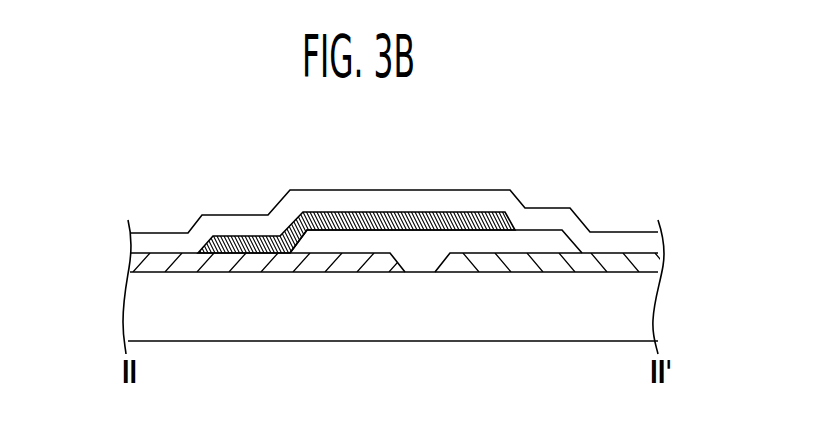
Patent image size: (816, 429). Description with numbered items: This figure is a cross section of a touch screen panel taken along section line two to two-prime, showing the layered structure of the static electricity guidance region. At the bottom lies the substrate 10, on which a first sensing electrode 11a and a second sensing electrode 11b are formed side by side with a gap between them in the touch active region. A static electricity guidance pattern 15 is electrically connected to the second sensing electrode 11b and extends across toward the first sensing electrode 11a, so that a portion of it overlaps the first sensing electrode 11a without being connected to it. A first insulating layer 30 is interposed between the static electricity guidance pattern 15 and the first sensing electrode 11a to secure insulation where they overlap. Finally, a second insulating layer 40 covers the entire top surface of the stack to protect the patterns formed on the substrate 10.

The substrate 10 is at (137, 302).
The first sensing electrode 11a is at (492, 262).
The second sensing electrode 11b is at (325, 262).
The static electricity guidance pattern 15 is at (422, 211).
The first insulating layer 30 is at (540, 238).
The second insulating layer 40 is at (137, 239).